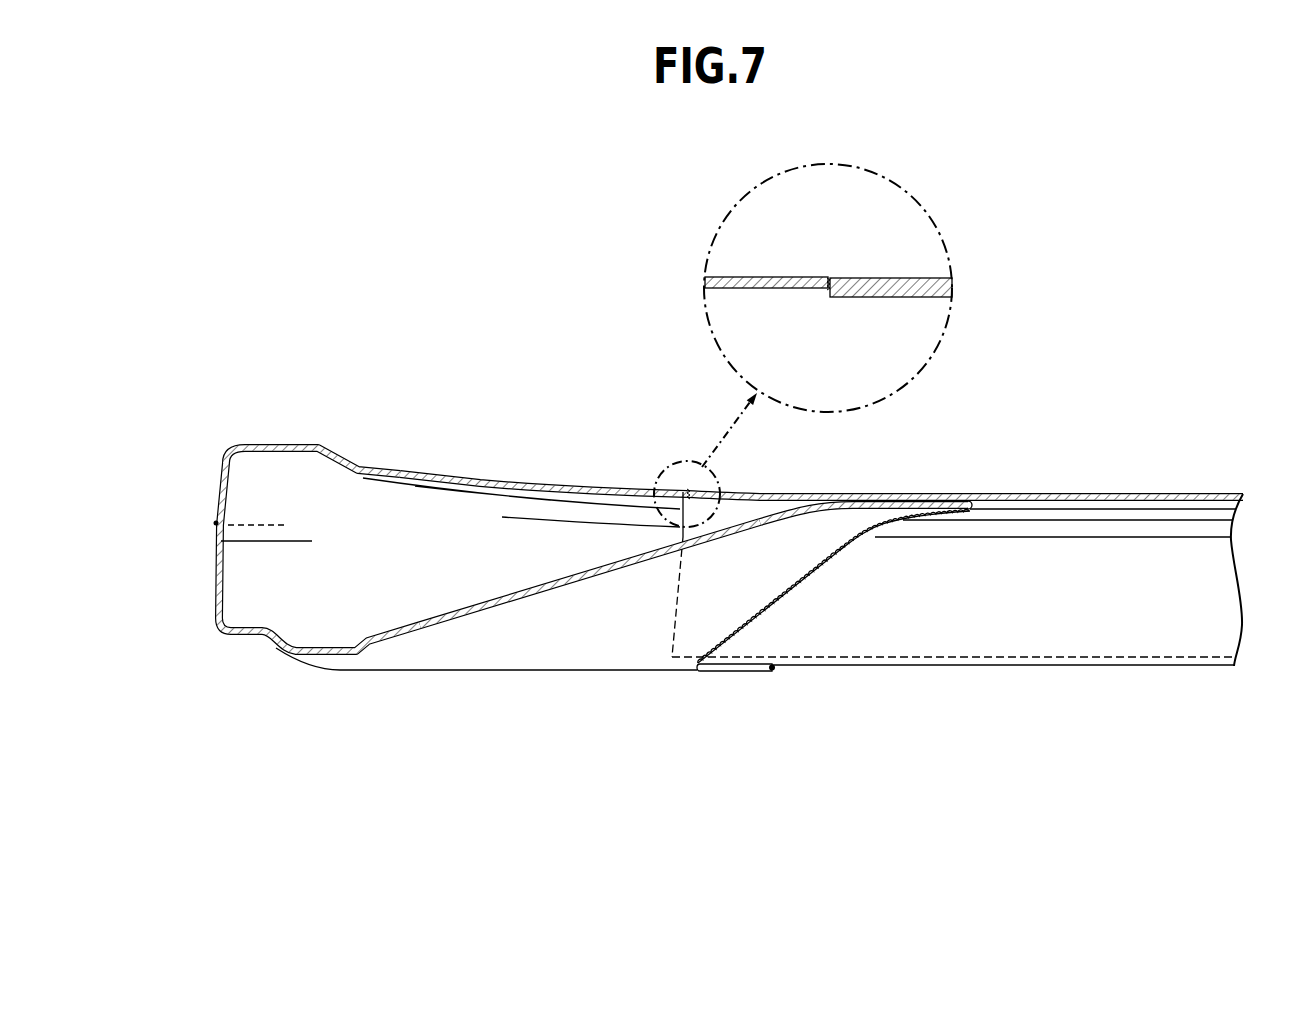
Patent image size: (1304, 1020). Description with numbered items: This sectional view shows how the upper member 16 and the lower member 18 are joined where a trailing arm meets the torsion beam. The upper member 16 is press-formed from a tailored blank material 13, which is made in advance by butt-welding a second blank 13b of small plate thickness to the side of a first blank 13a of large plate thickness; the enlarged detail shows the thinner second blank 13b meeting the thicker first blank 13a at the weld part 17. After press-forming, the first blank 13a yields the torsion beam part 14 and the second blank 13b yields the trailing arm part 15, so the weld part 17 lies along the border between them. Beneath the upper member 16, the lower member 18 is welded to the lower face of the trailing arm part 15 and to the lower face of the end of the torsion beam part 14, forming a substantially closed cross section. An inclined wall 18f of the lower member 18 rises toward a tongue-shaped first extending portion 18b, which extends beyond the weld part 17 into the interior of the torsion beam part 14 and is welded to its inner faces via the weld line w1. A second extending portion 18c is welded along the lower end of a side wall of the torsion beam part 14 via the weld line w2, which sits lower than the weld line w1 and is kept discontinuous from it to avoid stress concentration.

The tailored blank material 13 is at (827, 315).
The first blank 13a is at (891, 252).
The second blank 13b is at (763, 277).
The torsion beam part 14 is at (1093, 484).
The trailing arm part 15 is at (509, 476).
The upper member 16 is at (435, 444).
The weld part 17 is at (683, 492).
The lower member 18 is at (588, 607).
The first extending portion 18b is at (944, 502).
The second extending portion 18c is at (740, 673).
The inclined wall 18f is at (552, 588).
The weld line w1 is at (808, 580).
The weld line w2 is at (774, 671).